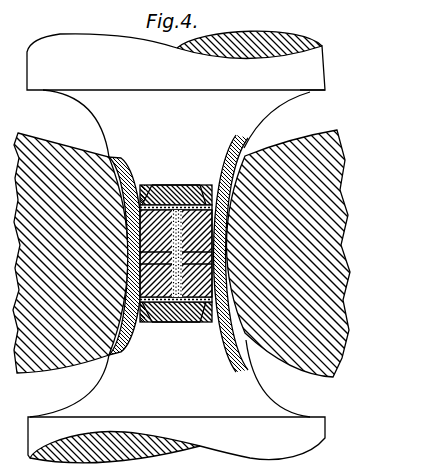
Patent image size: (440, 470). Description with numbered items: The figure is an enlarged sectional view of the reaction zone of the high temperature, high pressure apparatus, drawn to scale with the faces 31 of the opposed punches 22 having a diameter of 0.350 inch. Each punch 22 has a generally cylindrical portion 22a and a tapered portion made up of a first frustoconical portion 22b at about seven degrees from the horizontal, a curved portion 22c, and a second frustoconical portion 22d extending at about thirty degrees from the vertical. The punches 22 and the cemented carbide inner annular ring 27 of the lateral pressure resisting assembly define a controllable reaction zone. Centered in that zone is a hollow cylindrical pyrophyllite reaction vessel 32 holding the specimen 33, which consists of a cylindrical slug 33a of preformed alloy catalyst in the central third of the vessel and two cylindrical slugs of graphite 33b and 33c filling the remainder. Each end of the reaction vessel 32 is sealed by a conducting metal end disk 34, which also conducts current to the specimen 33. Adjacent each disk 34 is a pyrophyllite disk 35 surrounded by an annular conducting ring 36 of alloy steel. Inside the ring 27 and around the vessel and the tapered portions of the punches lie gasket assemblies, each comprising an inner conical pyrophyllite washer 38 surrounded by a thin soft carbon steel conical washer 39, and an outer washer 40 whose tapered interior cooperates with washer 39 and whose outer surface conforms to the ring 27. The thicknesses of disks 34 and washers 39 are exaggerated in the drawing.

The punch 22 is at (242, 133).
The generally cylindrical portion 22a is at (323, 60).
The first frustoconical portion 22b is at (310, 93).
The curved portion 22c is at (253, 118).
The second frustoconical portion 22d is at (101, 121).
The inner annular ring 27 is at (62, 371).
The punch face 31 is at (178, 183).
The reaction vessel 32 is at (215, 246).
The specimen 33 is at (215, 264).
The cylindrical slug of preformed alloy catalyst 33a is at (135, 268).
The cylindrical slug of graphite 33b is at (225, 285).
The cylindrical slug of graphite 33c is at (227, 213).
The conducting metal end disk 34 is at (170, 184).
The pyrophyllite disk 35 is at (198, 184).
The annular conducting ring 36 is at (143, 184).
The inner conical pyrophyllite washer 38 is at (233, 160).
The soft carbon steel conical washer 39 is at (226, 181).
The washer 40 is at (118, 201).